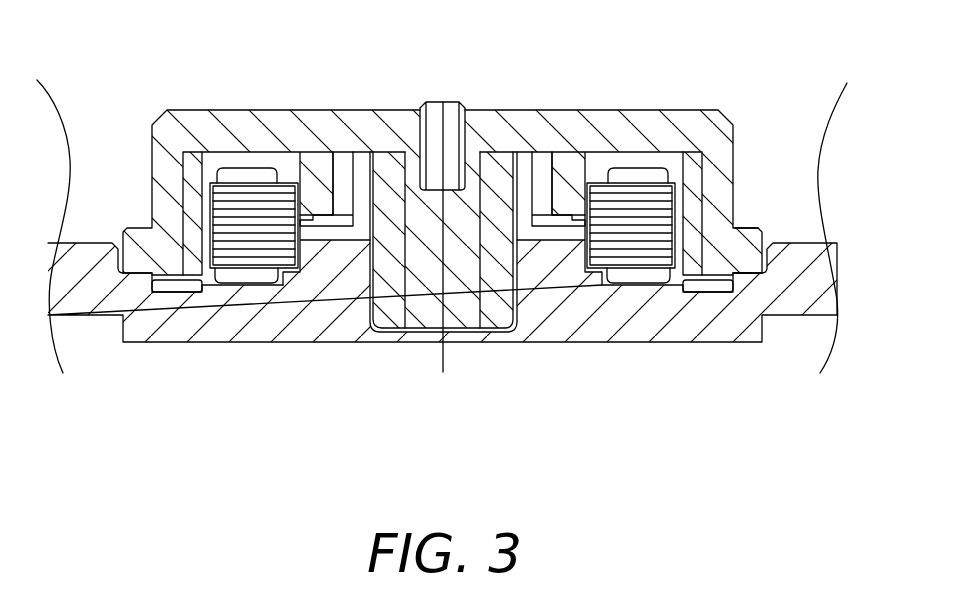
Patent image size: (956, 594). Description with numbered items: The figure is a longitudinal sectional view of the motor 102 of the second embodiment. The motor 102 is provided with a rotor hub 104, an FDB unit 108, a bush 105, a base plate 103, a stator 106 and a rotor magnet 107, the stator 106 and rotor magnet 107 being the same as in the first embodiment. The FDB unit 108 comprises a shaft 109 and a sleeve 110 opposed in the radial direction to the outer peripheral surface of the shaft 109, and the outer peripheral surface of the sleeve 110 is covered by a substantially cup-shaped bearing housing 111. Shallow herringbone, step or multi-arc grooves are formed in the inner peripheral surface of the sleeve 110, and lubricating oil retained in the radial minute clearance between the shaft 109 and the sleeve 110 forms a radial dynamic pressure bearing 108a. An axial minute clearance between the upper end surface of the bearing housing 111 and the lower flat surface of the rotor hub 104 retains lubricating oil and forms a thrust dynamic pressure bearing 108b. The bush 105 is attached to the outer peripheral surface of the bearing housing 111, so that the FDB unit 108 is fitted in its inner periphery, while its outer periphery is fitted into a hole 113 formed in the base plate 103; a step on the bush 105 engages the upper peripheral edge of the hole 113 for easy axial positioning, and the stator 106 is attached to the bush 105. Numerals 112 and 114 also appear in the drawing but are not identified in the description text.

The motor 102 is at (145, 99).
The base plate 103 is at (93, 285).
The rotor hub 104 is at (761, 172).
The bush 105 is at (303, 323).
The stator 106 is at (240, 230).
The rotor magnet 107 is at (197, 253).
The FDB unit 108 is at (505, 356).
The radial dynamic pressure bearing 108a is at (482, 152).
The thrust dynamic pressure bearing 108b is at (533, 153).
The shaft 109 is at (428, 223).
The sleeve 110 is at (385, 225).
The bearing housing 111 is at (425, 335).
The stator coil 112 is at (588, 240).
The hole 113 is at (567, 287).
The cover flange 114 is at (747, 240).